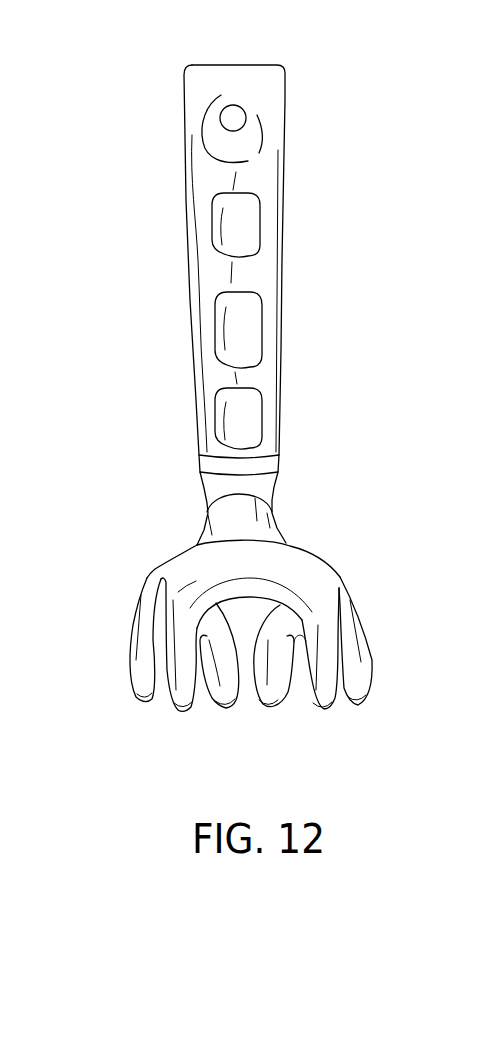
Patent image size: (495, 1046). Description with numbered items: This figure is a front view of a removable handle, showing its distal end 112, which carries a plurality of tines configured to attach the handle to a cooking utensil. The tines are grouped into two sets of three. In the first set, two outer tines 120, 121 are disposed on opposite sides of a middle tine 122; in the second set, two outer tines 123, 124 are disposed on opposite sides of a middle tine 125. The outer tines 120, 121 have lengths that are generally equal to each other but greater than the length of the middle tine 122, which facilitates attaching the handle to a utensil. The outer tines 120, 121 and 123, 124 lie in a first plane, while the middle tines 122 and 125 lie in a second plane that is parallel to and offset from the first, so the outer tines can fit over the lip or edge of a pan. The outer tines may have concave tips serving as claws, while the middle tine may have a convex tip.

The distal end 112 is at (308, 548).
The outer tine 120 is at (373, 677).
The outer tine 121 is at (268, 717).
The middle tine 122 is at (328, 717).
The outer tine 123 is at (140, 695).
The outer tine 124 is at (222, 717).
The middle tine 125 is at (180, 717).